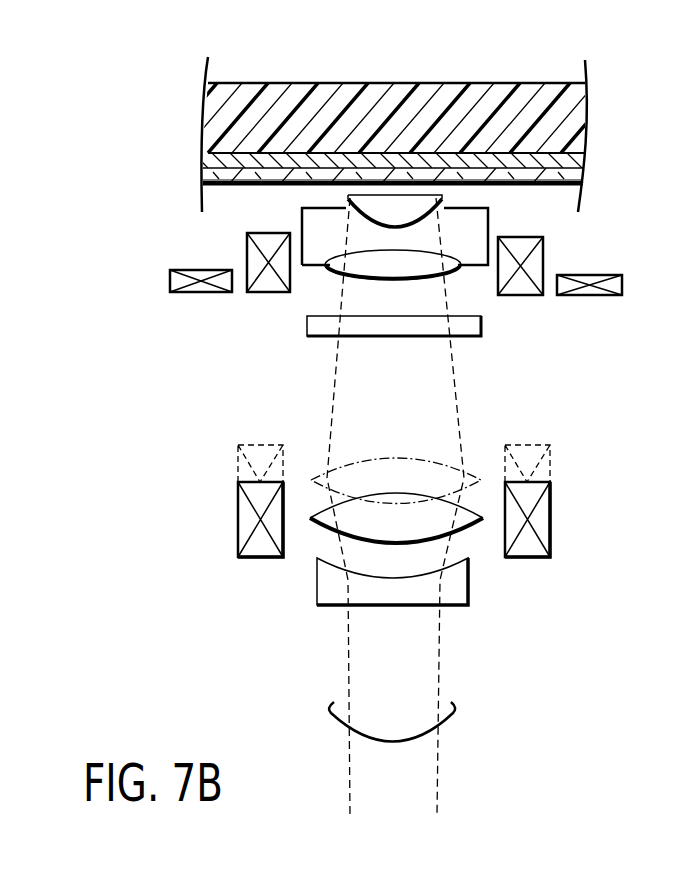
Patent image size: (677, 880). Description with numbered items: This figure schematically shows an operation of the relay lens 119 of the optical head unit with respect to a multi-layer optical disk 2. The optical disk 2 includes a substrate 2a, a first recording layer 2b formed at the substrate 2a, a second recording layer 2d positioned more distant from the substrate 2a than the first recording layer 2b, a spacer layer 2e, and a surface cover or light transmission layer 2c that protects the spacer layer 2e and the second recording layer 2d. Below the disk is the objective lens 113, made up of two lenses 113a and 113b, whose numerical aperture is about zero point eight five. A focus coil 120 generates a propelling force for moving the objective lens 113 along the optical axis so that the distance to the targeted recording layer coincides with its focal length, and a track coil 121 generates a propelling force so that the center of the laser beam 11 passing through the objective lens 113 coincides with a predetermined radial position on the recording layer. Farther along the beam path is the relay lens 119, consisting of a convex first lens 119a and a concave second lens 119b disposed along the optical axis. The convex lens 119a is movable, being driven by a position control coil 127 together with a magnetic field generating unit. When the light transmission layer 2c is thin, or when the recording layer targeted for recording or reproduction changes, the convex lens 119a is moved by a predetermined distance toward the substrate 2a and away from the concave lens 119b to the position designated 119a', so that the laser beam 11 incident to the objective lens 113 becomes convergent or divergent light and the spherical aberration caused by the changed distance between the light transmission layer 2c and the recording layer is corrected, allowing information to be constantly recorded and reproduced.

The optical disk 2 is at (398, 83).
The substrate 2a is at (522, 100).
The first recording layer 2b is at (508, 188).
The surface cover (light transmission layer) 2c is at (542, 188).
The second recording layer 2d is at (245, 185).
The spacer layer 2e is at (573, 161).
The objective lens 113 is at (475, 300).
The lens 113a is at (437, 213).
The lens 113b is at (460, 267).
The relay lens 119 is at (444, 515).
The first lens (convex lens) 119a is at (445, 543).
The position of the convex lens 119a' is at (365, 449).
The second lens (concave lens) 119b is at (453, 597).
The focus coil 120 is at (268, 293).
The track coil 121 is at (202, 293).
The position control coil 127 is at (261, 558).
The laser beam 11 is at (458, 722).